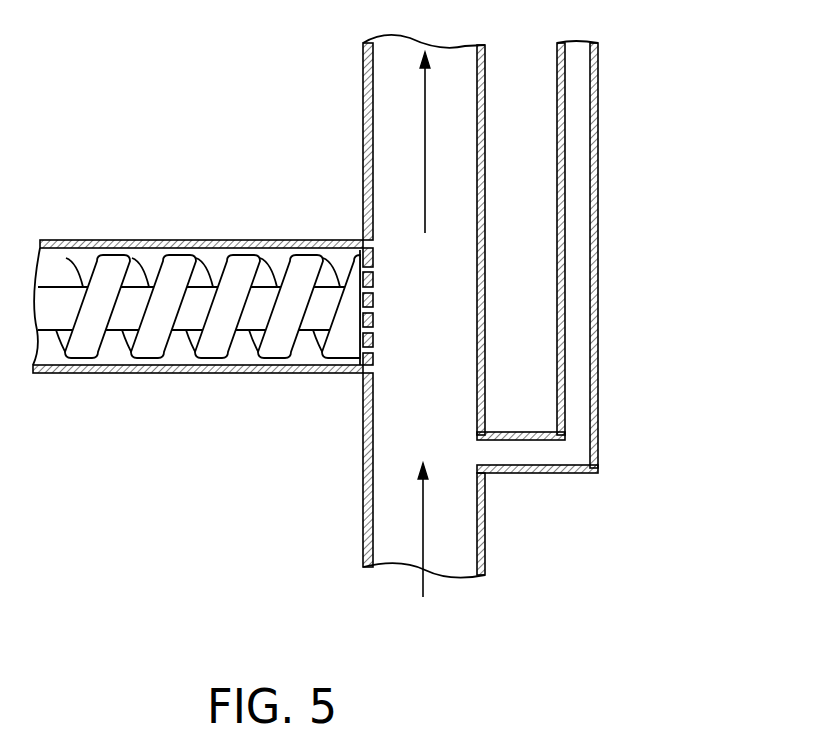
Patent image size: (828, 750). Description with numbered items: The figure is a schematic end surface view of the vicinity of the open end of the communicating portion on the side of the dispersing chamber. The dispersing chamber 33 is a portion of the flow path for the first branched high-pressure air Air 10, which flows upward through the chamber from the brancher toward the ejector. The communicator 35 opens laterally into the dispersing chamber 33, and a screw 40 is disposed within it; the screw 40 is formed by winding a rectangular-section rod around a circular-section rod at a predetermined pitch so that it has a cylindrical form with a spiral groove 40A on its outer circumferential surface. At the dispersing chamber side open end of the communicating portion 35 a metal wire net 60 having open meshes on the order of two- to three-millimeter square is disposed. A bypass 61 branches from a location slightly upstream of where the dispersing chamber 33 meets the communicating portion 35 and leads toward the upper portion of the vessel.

The dispersing chamber 33 is at (383, 512).
The bypass 61 is at (582, 377).
The first branched high-pressure air 10 is at (423, 585).
The communicator 35 is at (193, 373).
The metal wire net 60 is at (372, 256).
The screw 40 is at (199, 240).
The spiral groove 40A is at (88, 266).